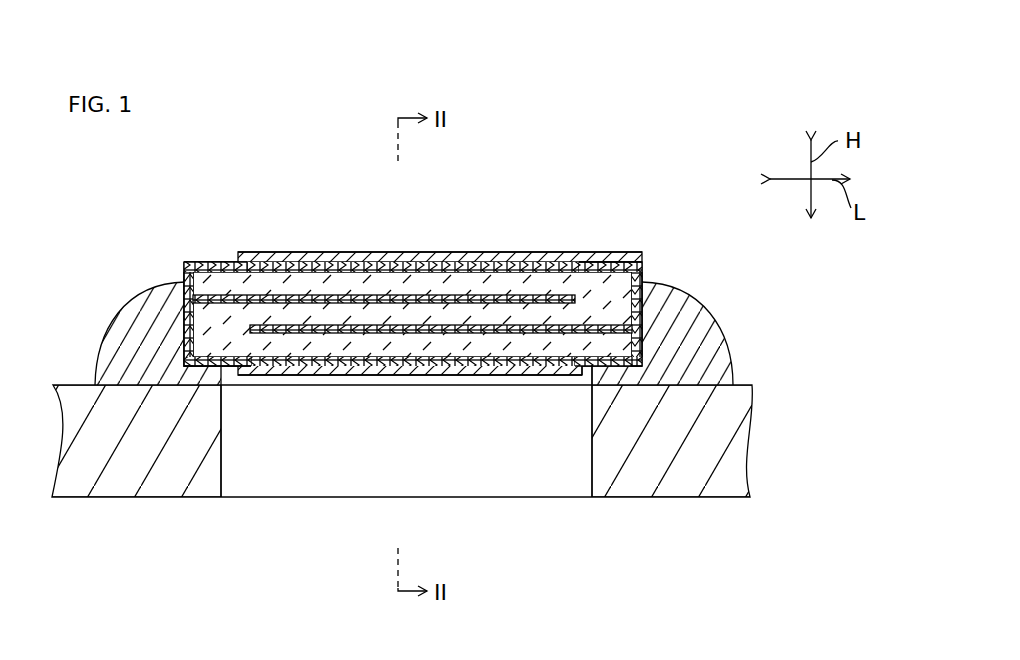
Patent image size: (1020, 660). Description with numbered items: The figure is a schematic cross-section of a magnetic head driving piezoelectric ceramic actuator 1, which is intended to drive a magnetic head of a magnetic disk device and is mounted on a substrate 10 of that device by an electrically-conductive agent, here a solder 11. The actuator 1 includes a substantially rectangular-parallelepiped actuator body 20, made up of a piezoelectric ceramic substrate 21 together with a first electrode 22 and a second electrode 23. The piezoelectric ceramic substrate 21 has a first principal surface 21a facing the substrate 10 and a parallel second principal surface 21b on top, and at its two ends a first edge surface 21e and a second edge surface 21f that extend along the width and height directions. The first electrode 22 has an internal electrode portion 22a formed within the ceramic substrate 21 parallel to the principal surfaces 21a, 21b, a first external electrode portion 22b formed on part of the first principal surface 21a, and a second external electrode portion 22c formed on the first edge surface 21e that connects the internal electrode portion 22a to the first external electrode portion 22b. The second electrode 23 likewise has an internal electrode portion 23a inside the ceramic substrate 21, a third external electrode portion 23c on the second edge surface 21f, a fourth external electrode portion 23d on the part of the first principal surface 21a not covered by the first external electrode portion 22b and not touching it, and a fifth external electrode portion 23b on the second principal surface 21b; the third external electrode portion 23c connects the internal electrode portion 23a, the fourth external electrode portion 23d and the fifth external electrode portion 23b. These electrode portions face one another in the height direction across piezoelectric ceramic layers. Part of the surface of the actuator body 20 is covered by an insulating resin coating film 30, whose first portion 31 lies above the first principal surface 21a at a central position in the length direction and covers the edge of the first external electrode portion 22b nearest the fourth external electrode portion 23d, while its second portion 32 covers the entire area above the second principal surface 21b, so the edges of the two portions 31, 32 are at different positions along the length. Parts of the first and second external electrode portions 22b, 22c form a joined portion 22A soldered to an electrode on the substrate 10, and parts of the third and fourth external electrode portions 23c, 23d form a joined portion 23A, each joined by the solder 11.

The magnetic head driving piezoelectric ceramic actuator 1 is at (624, 219).
The substrate 10 is at (752, 442).
The solder 11 is at (722, 350).
The actuator body 20 is at (524, 255).
The piezoelectric ceramic substrate 21 is at (482, 270).
The first principal surface 21a is at (418, 360).
The second principal surface 21b is at (422, 262).
The first edge surface 21e is at (192, 322).
The second edge surface 21f is at (633, 318).
The first electrode 22 is at (184, 289).
The internal electrode portion 22a is at (272, 294).
The first external electrode portion 22b is at (283, 366).
The second external electrode portion 22c is at (185, 347).
The joined portion 22A is at (188, 369).
The second electrode 23 is at (645, 278).
The internal electrode portion 23a is at (542, 334).
The fifth external electrode portion 23b is at (570, 262).
The third external electrode portion 23c is at (644, 331).
The joined portion 23A is at (645, 347).
The fourth external electrode portion 23d is at (598, 372).
The coating film 30 is at (353, 251).
The first portion 31 is at (362, 376).
The second portion 32 is at (305, 252).